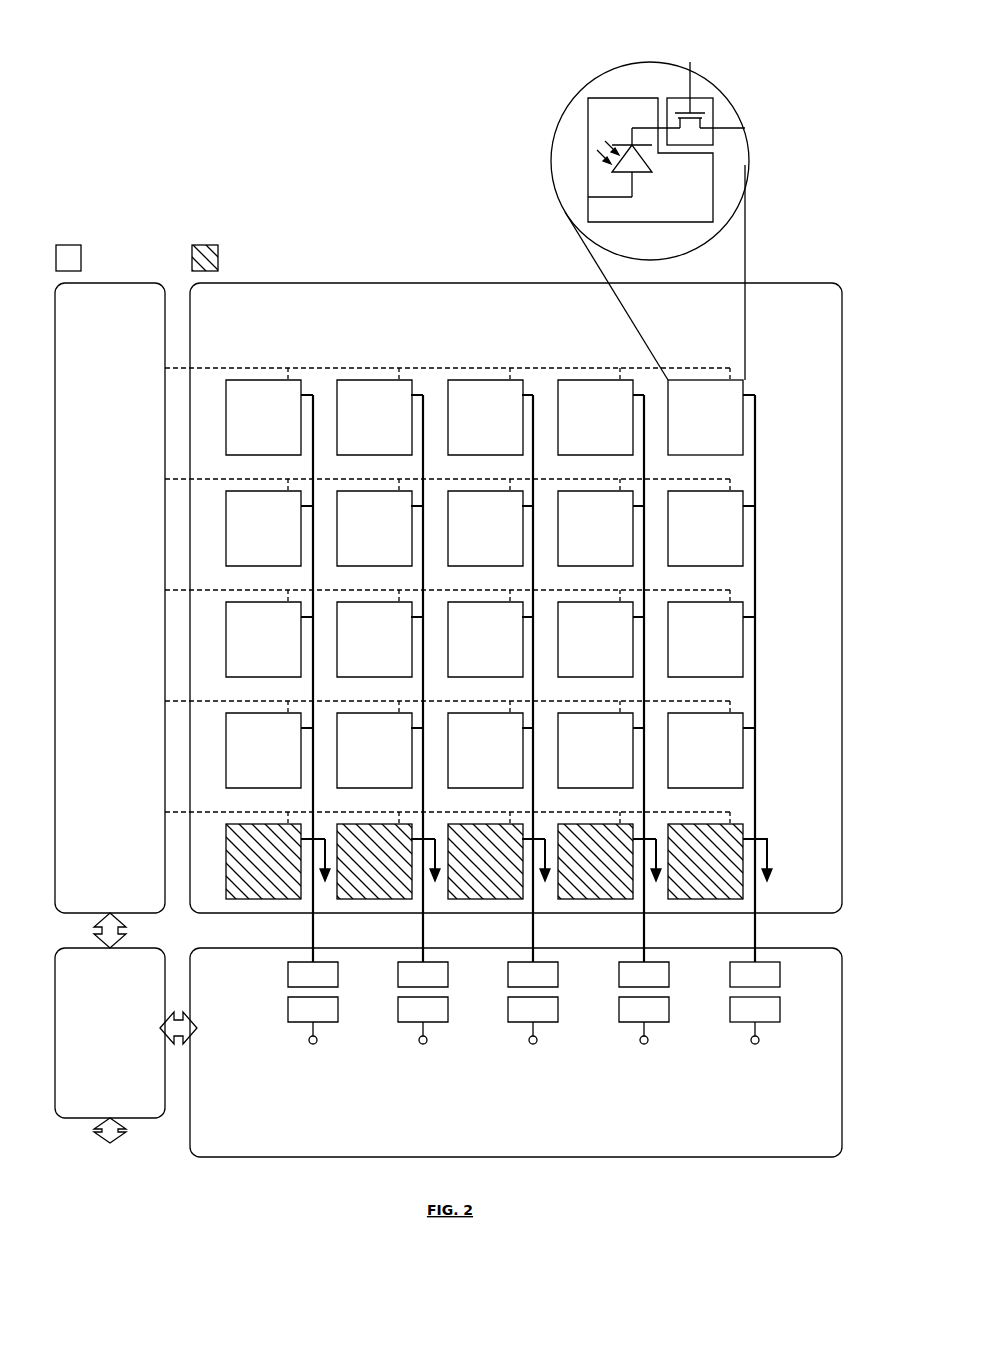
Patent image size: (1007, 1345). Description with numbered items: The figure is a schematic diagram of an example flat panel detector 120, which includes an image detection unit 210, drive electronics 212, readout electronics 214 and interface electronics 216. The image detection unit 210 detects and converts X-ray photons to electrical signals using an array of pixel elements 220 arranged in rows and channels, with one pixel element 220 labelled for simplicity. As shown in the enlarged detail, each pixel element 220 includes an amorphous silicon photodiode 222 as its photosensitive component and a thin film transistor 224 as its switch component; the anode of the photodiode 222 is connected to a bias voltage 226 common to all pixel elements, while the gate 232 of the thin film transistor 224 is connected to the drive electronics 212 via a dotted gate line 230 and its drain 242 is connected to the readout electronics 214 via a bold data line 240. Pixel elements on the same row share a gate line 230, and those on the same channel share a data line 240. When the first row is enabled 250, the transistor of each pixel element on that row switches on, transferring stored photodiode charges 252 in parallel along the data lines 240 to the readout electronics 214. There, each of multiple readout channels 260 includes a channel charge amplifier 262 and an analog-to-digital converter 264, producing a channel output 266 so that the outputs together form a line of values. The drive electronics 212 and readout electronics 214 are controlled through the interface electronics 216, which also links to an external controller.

The flat panel detector 120 is at (106, 59).
The image detection unit 210 is at (516, 598).
The drive electronics 212 is at (110, 598).
The readout electronics 214 is at (516, 1052).
The interface electronics 216 is at (110, 1033).
The pixel element 220 is at (705, 417).
The photodiode 222 is at (587, 140).
The thin film transistor 224 is at (714, 98).
The bias voltage 226 is at (587, 197).
The gate line 230 is at (304, 367).
The gate of TFT 232 is at (689, 63).
The data line 240 is at (756, 752).
The drain of TFT 242 is at (745, 128).
The enabled row 250 is at (744, 825).
The charge transfer 252 is at (771, 849).
The readout channel 260 is at (780, 1054).
The channel charge amplifier 262 is at (781, 972).
The analog-to-digital converter 264 is at (781, 1006).
The channel output 266 is at (760, 1040).